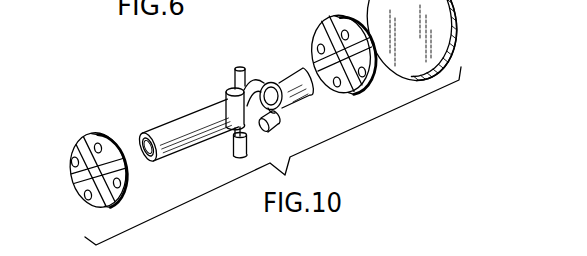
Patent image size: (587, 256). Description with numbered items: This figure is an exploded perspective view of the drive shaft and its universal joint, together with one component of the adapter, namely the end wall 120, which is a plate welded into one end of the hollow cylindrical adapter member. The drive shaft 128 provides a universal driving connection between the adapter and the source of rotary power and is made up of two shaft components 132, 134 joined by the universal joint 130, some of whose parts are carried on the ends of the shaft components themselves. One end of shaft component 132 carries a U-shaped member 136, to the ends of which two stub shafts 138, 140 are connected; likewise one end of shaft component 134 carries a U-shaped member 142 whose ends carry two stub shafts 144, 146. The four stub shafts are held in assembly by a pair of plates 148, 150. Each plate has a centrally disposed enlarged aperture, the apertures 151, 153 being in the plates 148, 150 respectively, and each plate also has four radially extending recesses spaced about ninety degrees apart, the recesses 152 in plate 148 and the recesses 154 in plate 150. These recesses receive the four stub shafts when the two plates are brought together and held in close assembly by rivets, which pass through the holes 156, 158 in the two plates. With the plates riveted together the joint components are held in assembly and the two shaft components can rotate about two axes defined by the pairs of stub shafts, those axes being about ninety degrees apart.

The end wall 120 is at (432, 30).
The drive shaft 128 is at (186, 102).
The universal joint 130 is at (252, 64).
The shaft component 132 is at (295, 92).
The shaft component 134 is at (176, 142).
The U-shaped member 136 is at (277, 112).
The stub shaft 138 is at (262, 127).
The stub shaft 140 is at (234, 80).
The U-shaped member 142 is at (229, 100).
The stub shaft 144 is at (240, 67).
The stub shaft 146 is at (241, 157).
The plate 148 is at (344, 60).
The plate 150 is at (95, 166).
The enlarged aperture 151 is at (372, 72).
The recesses 152 is at (341, 20).
The enlarged aperture 153 is at (72, 176).
The recesses 154 is at (83, 132).
The holes 156 is at (314, 45).
The holes 158 is at (73, 158).